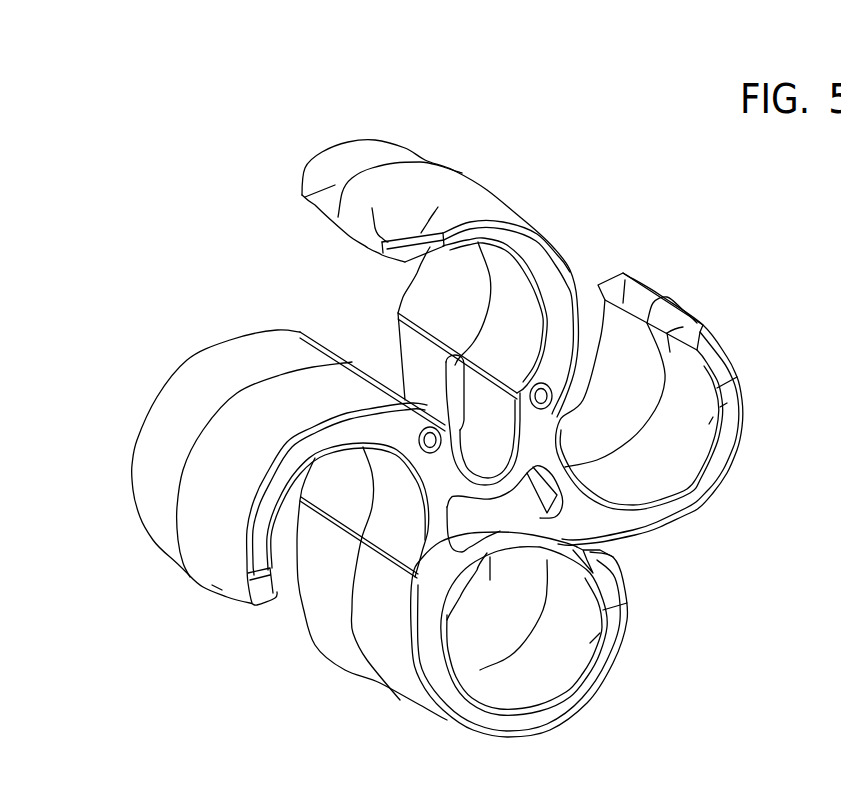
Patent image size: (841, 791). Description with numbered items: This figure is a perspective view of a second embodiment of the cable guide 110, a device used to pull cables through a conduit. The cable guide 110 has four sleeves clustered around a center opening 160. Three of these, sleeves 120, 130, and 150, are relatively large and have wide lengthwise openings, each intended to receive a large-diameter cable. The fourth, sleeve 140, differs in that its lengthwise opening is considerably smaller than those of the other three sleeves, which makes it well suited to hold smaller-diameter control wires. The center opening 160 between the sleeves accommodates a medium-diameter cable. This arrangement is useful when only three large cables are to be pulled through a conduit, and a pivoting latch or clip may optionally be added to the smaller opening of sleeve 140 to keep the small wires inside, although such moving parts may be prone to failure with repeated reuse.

The cable guide 110 is at (683, 260).
The sleeve 120 is at (318, 157).
The sleeve 130 is at (701, 506).
The sleeve 140 is at (628, 640).
The sleeve 150 is at (180, 362).
The center opening 160 is at (375, 343).